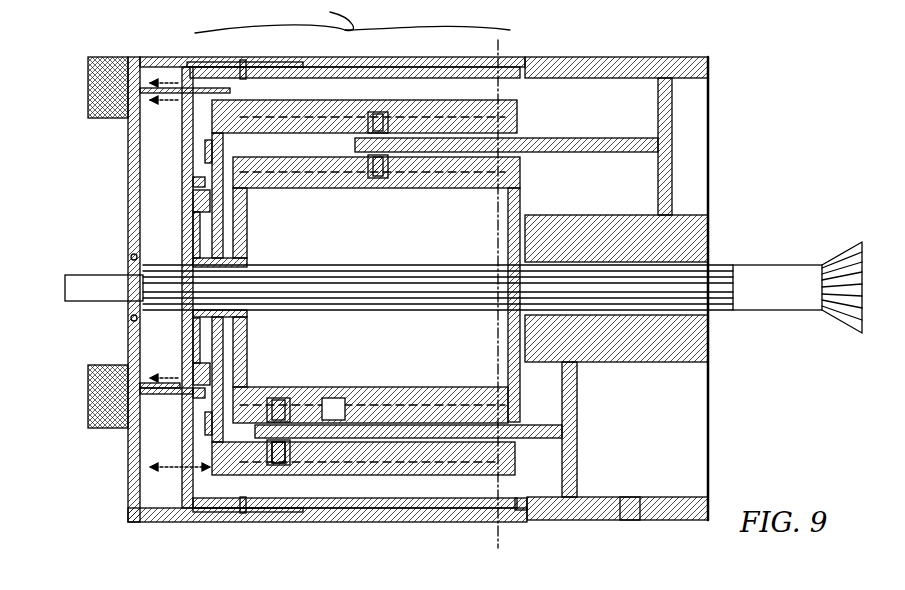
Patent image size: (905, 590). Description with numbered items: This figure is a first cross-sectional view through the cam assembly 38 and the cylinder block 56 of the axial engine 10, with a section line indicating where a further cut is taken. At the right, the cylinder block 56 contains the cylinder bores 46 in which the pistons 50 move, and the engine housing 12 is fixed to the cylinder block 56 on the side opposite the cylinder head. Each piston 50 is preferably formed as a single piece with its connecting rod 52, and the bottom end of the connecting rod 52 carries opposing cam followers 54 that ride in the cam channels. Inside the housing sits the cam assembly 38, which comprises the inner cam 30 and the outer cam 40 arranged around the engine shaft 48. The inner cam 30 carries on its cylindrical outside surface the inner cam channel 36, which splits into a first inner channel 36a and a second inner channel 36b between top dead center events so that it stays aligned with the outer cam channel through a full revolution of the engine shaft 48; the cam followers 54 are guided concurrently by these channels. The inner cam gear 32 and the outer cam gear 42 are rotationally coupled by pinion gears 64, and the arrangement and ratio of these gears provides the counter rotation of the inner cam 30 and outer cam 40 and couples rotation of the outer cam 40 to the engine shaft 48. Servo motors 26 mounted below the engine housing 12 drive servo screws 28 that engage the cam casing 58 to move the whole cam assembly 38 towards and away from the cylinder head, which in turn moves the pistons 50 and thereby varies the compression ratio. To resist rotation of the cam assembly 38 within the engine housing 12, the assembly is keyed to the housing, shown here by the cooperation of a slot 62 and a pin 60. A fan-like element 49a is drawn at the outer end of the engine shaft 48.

The axial engine 10 is at (497, 40).
The engine housing 12 is at (145, 512).
The servo motors 26 is at (110, 92).
The servo screws 28 is at (160, 385).
The inner cam 30 is at (408, 385).
The inner cam gear 32 is at (195, 236).
The inner cam channel 36 is at (318, 395).
The first inner channel 36a is at (335, 404).
The second inner channel 36b is at (278, 396).
The cam assembly 38 is at (352, 19).
The outer cam 40 is at (392, 455).
The outer cam gear 42 is at (200, 160).
The cylinder bores 46 is at (287, 470).
The engine shaft 48 is at (745, 285).
The fan 49a is at (845, 318).
The piston 50 is at (665, 120).
The connecting rod 52 is at (440, 432).
The cam follower 54 is at (280, 470).
The cylinder block 56 is at (690, 345).
The cam casing 58 is at (183, 512).
The pin 60 is at (243, 514).
The slot 62 is at (205, 512).
The pinion gears 64 is at (198, 202).